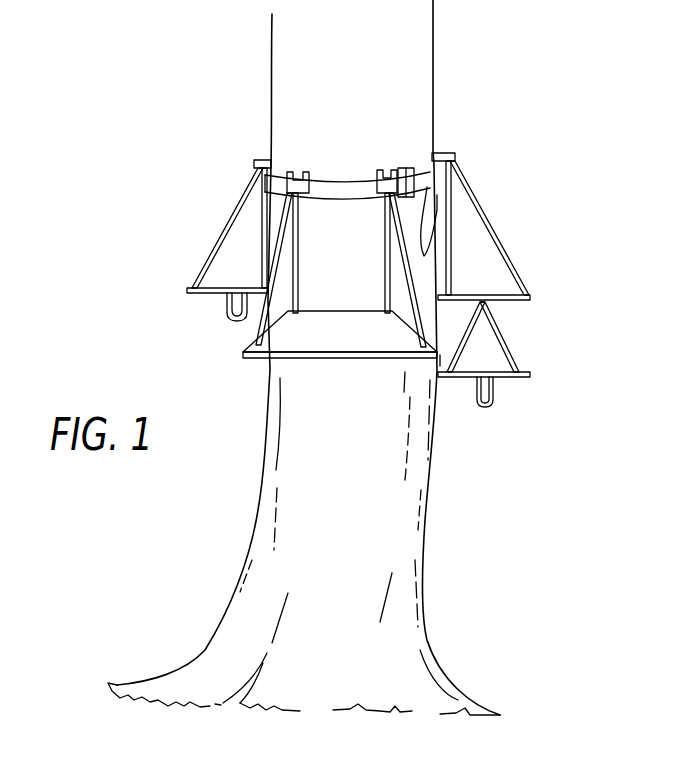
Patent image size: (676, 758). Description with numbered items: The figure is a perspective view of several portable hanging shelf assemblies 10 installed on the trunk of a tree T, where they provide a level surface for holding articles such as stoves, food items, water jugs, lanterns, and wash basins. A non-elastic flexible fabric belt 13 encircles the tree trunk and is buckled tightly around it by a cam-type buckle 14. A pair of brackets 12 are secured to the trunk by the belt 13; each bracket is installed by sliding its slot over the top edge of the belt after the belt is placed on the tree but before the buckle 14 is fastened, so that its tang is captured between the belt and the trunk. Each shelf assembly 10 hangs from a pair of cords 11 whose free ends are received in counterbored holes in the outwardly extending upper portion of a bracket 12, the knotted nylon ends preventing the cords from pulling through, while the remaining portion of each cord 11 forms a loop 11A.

The portable hanging shelf assembly 10 is at (217, 228).
The cord 11 is at (212, 255).
The loop 11A is at (225, 305).
The bracket 12 is at (257, 158).
The non-elastic flexible fabric belt 13 is at (340, 192).
The cam-type buckle 14 is at (406, 150).
The tree T is at (436, 128).